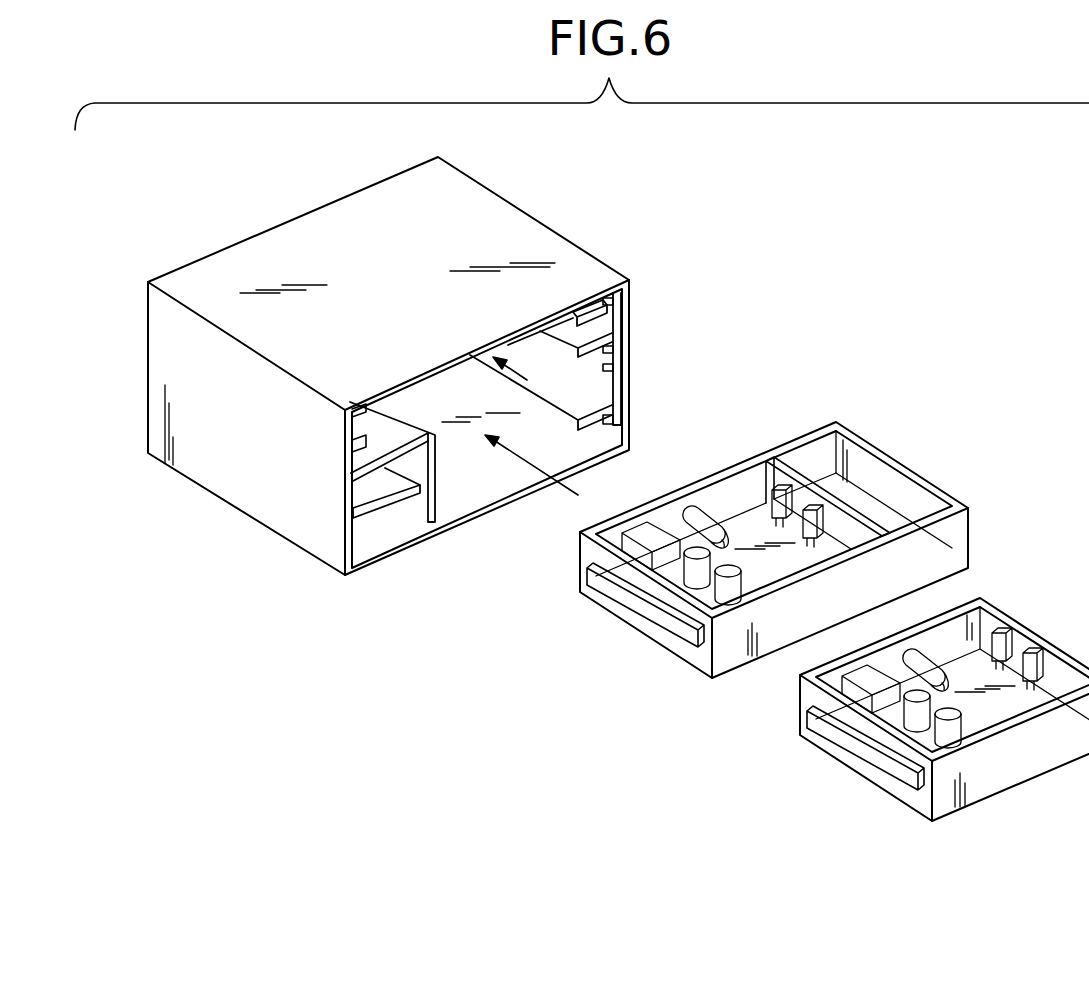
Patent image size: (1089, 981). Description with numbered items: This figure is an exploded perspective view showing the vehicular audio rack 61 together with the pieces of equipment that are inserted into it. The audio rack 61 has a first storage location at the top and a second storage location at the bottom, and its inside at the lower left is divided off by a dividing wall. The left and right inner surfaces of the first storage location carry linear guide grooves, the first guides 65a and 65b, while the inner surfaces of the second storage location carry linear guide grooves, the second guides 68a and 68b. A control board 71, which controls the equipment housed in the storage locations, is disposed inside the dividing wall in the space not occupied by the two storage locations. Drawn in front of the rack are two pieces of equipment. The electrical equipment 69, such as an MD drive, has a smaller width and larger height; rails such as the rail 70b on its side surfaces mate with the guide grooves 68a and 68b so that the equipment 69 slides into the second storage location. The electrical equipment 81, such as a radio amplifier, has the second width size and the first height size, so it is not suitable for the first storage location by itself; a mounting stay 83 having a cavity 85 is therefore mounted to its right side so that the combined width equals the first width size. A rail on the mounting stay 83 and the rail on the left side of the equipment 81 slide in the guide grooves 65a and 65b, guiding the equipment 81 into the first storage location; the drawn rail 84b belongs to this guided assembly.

The vehicular audio rack 61 is at (232, 485).
The first guide 65a is at (608, 327).
The first guide 65b is at (360, 430).
The second guide 68a is at (610, 392).
The second guide 68b is at (437, 477).
The control board 71 is at (383, 512).
The electrical equipment 81 is at (702, 655).
The mounting stay 83 is at (858, 435).
The cavity 85 is at (923, 503).
The handle 84b is at (618, 598).
The electrical equipment 69 is at (1027, 763).
The rail 70b is at (850, 747).